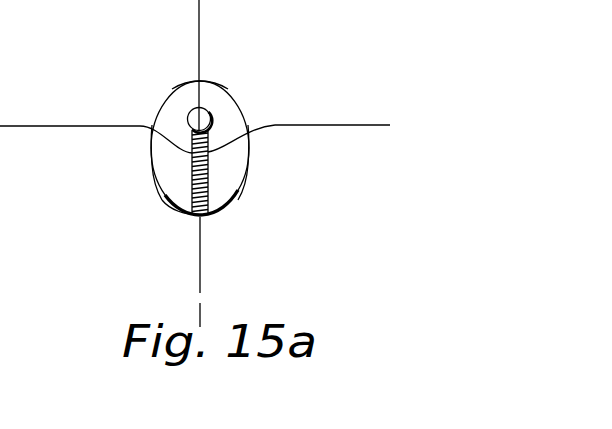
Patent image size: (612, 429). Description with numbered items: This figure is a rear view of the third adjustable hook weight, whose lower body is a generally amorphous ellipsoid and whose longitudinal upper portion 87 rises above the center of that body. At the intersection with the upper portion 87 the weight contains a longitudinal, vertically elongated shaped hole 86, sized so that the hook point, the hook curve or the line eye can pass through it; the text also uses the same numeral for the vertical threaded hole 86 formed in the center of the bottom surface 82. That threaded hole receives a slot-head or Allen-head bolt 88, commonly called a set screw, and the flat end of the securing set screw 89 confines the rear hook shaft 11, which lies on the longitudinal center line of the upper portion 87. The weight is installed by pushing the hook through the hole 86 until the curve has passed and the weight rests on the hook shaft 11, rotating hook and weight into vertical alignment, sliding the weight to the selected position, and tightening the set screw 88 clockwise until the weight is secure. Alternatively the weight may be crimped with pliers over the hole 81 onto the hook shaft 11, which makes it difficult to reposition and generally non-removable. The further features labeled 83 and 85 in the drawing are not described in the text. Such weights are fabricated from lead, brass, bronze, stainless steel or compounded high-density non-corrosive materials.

The rear hook shaft 11 is at (205, 110).
The hole 81 is at (240, 108).
The bottom surface 82 is at (170, 205).
The left side wall 83 is at (165, 180).
The upper portion 85 is at (185, 92).
The elongated shaped hole 86 is at (158, 151).
The upper portion 87 is at (248, 170).
The set screw 88 is at (232, 206).
The securing set screw 89 is at (206, 217).